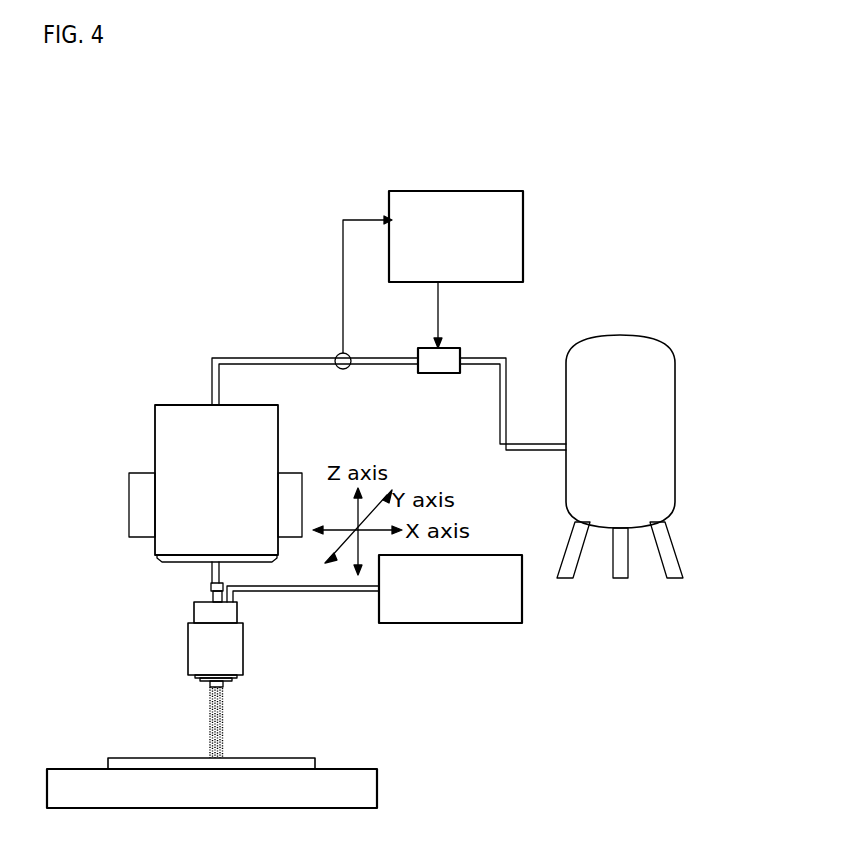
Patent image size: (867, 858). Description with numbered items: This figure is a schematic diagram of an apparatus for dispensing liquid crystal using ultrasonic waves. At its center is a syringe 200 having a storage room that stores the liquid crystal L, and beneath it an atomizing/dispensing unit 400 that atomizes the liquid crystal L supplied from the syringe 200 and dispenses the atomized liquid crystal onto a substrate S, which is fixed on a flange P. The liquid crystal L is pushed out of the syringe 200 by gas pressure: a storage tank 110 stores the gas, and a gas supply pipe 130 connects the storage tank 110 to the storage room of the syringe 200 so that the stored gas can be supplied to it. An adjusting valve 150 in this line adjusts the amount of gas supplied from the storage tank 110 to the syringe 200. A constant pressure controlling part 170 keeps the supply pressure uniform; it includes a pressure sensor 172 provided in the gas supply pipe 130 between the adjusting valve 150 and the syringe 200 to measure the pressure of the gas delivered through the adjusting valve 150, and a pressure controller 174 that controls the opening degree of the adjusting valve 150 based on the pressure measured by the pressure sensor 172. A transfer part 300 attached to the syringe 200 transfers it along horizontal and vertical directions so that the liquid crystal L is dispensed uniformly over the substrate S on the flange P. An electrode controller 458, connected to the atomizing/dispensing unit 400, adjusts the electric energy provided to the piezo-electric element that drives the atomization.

The storage tank 110 is at (663, 404).
The gas supply pipe 130 is at (240, 360).
The adjusting valve 150 is at (437, 373).
The constant pressure controlling part 170 is at (370, 128).
The pressure sensor 172 is at (338, 354).
The pressure controller 174 is at (410, 191).
The syringe 200 is at (163, 438).
The transfer part 300 is at (140, 508).
The atomizing/dispensing unit 400 is at (198, 648).
The electrode controller 458 is at (453, 623).
The liquid crystal L is at (225, 715).
The substrate S is at (305, 762).
The flange P is at (368, 790).